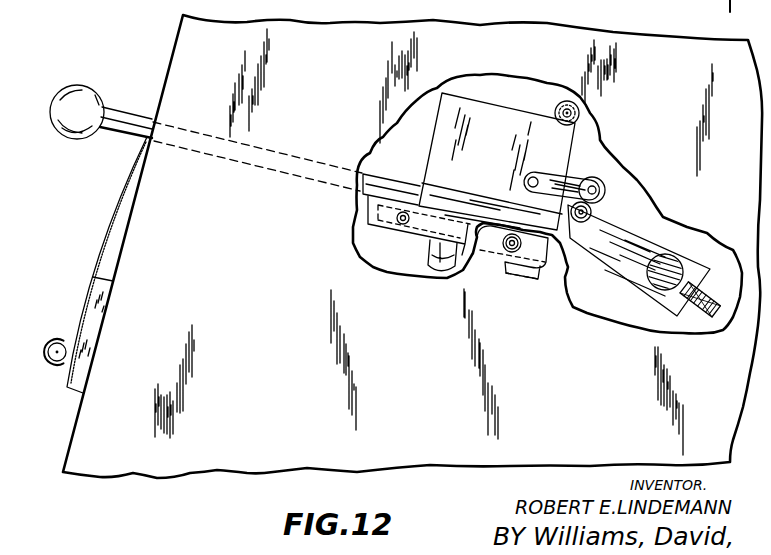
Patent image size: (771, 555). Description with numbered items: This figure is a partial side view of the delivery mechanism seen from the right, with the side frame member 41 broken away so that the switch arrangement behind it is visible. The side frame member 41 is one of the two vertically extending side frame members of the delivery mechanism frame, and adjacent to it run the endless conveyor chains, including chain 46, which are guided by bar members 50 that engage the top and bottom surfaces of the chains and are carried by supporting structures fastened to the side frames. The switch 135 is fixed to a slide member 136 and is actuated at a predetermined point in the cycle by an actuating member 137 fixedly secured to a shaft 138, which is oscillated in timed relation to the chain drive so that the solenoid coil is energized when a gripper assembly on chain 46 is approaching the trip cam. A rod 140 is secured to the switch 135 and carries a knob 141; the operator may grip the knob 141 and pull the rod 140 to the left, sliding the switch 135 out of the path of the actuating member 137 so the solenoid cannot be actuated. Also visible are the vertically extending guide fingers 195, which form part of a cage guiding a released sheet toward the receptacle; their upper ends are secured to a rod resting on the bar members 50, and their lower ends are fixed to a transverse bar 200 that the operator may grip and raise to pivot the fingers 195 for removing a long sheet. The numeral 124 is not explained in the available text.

The side frame member 41 is at (174, 55).
The knob 141 is at (94, 74).
The rod 140 is at (126, 139).
The guide fingers 195 is at (103, 242).
The bar 200 is at (54, 359).
The bar members 50 is at (495, 107).
The chain 46 is at (582, 108).
The switch 135 is at (570, 144).
The slide member 136 is at (478, 250).
The actuating member 137 is at (637, 283).
The shaft 138 is at (680, 256).
The member 124 is at (706, 6).